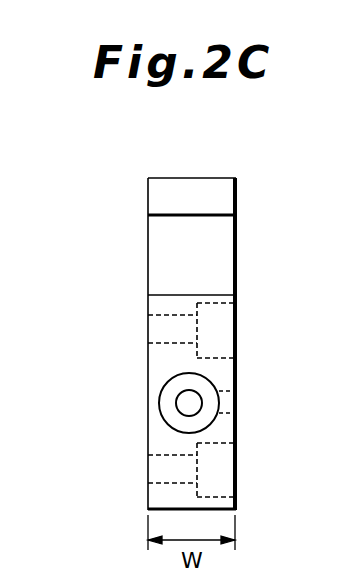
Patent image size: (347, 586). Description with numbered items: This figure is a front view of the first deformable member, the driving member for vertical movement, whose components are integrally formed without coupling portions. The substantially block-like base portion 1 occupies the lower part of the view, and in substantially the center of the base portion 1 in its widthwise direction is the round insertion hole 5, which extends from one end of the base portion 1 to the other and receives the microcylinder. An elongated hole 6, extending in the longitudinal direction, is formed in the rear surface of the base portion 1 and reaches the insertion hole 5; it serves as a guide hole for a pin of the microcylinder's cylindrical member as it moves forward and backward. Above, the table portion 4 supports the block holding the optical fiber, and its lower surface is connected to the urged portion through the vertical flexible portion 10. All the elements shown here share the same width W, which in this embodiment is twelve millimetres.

The base portion 1 is at (213, 340).
The table portion 4 is at (220, 198).
The vertical flexible portion 10 is at (217, 267).
The insertion hole 5 is at (163, 400).
The elongated hole 6 is at (236, 404).